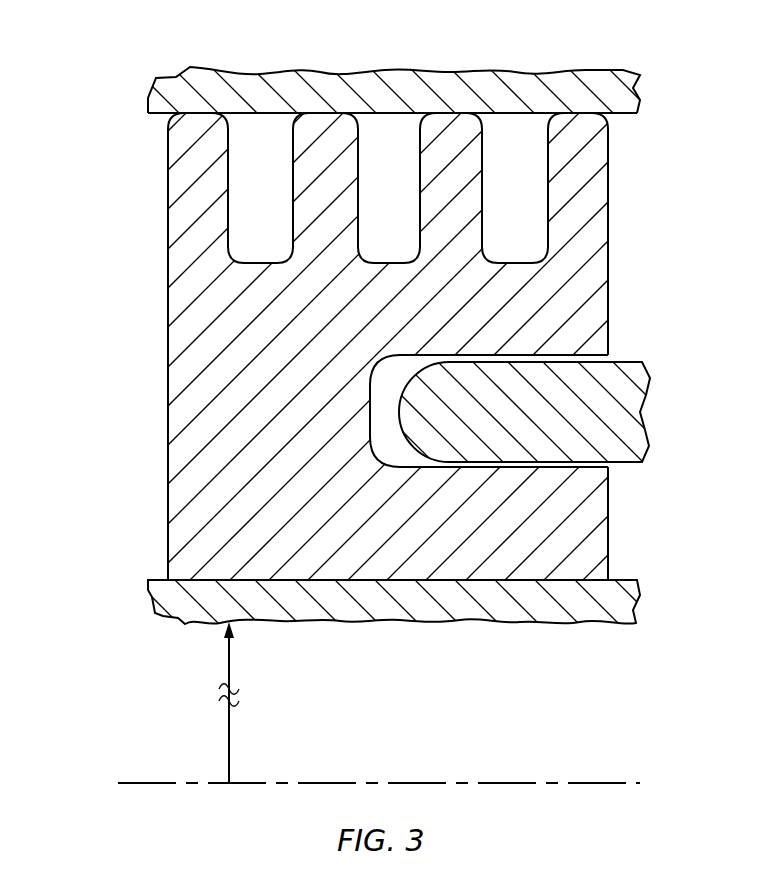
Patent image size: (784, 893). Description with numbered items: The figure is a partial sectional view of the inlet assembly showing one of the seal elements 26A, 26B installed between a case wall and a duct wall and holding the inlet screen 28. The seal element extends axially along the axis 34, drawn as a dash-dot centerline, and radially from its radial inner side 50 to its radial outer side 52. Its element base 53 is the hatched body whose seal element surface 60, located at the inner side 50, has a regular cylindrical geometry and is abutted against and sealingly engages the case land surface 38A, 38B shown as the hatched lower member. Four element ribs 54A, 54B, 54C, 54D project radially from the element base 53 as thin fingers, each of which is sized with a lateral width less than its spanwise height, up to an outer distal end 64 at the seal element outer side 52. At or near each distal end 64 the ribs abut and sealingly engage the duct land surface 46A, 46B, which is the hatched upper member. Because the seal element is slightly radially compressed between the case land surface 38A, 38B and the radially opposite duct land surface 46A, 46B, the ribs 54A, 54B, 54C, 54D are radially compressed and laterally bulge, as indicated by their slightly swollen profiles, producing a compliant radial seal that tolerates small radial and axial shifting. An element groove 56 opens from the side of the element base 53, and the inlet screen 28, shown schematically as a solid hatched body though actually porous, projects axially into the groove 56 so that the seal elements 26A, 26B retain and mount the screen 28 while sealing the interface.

The first seal element 26A is at (392, 350).
The second seal element 26B is at (392, 350).
The inlet screen 28 is at (660, 420).
The axis 34 is at (130, 783).
The first case land surface 38A is at (355, 572).
The second case land surface 38B is at (158, 580).
The first duct land surface 46A is at (379, 123).
The second duct land surface 46B is at (158, 114).
The radial inner side 50 is at (355, 592).
The radial outer side 52 is at (379, 100).
The element base 53 is at (280, 411).
The element rib 54A is at (212, 202).
The element rib 54B is at (340, 202).
The element rib 54C is at (469, 202).
The element rib 54D is at (597, 202).
The element groove 56 is at (391, 468).
The seal element surface 60 is at (355, 592).
The outer distal end 64 is at (603, 40).